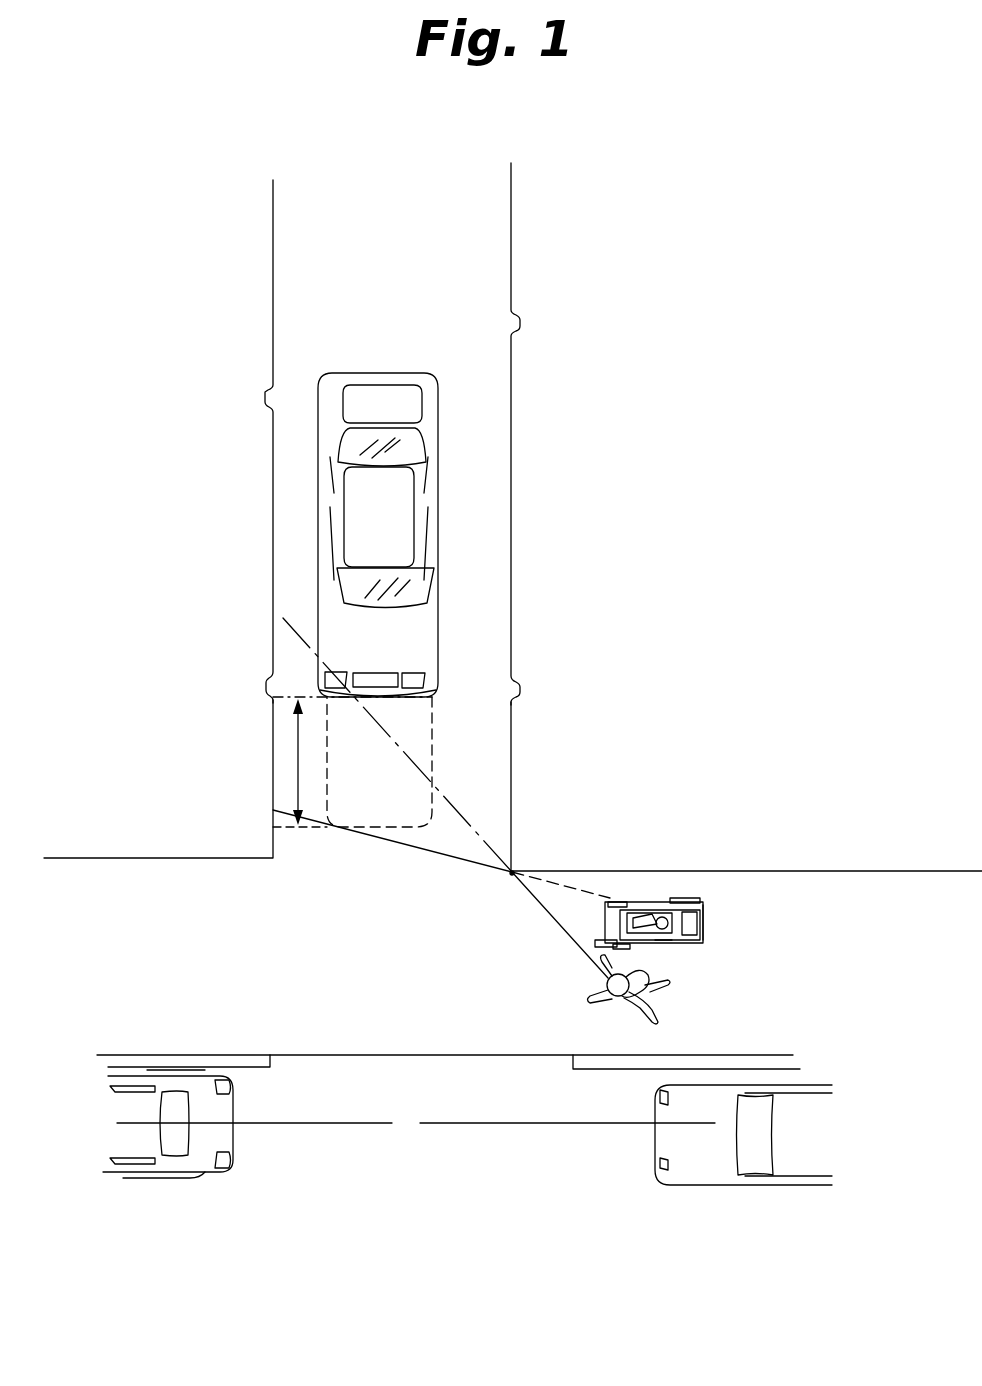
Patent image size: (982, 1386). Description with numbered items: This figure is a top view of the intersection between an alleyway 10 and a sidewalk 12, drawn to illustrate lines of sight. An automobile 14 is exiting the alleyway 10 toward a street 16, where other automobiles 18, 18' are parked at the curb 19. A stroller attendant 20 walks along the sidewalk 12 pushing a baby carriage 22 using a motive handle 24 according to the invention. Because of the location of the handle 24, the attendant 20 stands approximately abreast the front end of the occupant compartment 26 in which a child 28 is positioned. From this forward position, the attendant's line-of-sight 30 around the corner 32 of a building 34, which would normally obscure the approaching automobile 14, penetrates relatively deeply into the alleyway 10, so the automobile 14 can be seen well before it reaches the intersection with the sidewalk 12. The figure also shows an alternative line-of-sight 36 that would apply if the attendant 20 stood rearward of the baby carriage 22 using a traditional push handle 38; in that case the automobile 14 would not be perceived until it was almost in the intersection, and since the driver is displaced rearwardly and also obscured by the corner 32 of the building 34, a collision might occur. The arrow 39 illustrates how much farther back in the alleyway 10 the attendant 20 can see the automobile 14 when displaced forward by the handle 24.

The alleyway 10 is at (459, 314).
The sidewalk 12 is at (99, 882).
The automobile 14 is at (410, 636).
The building 34 is at (538, 784).
The arrow 39 is at (297, 757).
The alternative line-of-sight 36 is at (365, 838).
The line-of-sight 30 is at (458, 816).
The corner 32 is at (511, 878).
The baby carriage 22 is at (667, 890).
The motive handle 24 is at (597, 942).
The child 28 is at (650, 916).
The traditional push handle 38 is at (703, 907).
The occupant compartment 26 is at (670, 949).
The stroller attendant 20 is at (660, 1000).
The street 16 is at (468, 1210).
The curb 19 is at (757, 1062).
The automobile 18 is at (199, 1143).
The automobile 18' is at (743, 1161).